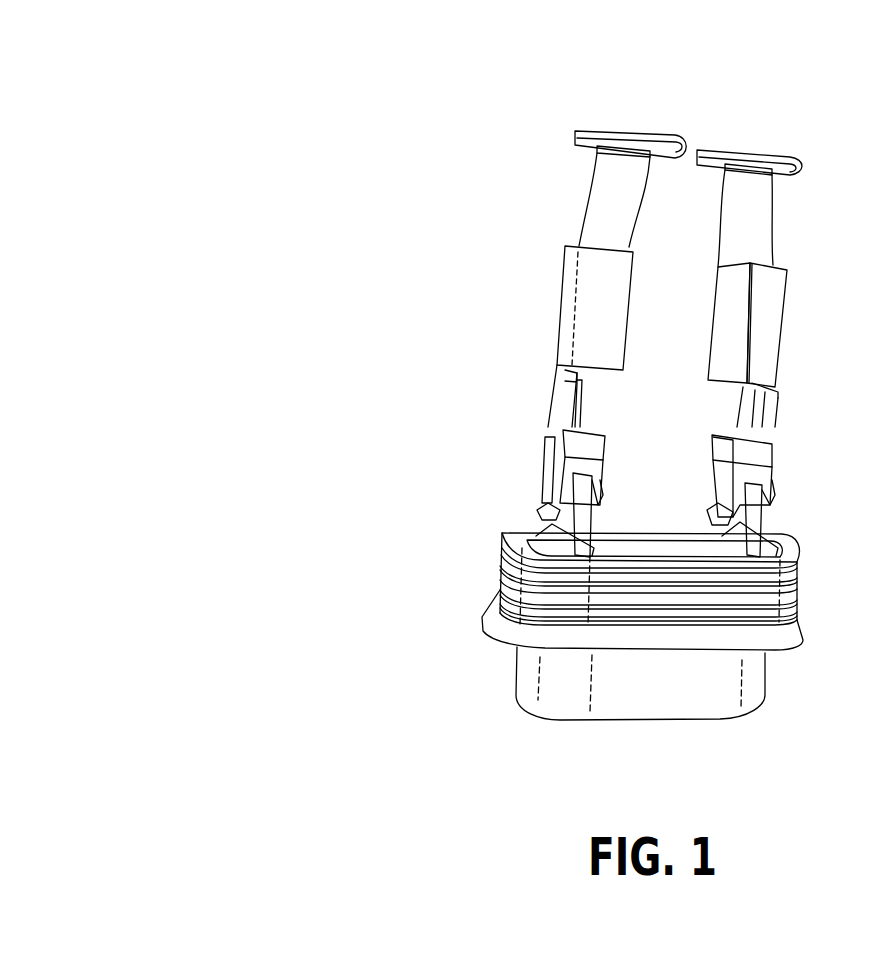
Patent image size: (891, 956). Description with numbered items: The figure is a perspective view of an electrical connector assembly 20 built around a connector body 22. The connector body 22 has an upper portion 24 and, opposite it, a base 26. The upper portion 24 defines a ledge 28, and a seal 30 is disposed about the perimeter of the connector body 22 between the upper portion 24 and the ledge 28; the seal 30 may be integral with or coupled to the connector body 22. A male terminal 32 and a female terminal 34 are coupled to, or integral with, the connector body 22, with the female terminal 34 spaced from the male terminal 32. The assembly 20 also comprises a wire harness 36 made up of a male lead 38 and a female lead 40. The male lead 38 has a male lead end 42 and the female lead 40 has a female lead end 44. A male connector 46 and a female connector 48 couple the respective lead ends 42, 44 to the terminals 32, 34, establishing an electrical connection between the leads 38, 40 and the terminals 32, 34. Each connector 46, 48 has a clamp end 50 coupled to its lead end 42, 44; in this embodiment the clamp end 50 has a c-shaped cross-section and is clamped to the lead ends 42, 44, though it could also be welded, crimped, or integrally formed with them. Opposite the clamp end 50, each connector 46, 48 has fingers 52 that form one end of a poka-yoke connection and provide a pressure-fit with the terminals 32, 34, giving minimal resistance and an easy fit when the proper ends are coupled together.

The electrical connector assembly 20 is at (126, 97).
The connector body 22 is at (806, 615).
The upper portion 24 is at (533, 592).
The base 26 is at (747, 703).
The ledge 28 is at (577, 637).
The seal 30 is at (497, 600).
The male terminal 32 is at (753, 533).
The female terminal 34 is at (553, 527).
The wire harness 36 is at (773, 143).
The male lead 38 is at (800, 167).
The female lead 40 is at (655, 145).
The male lead end 42 is at (767, 227).
The female lead end 44 is at (593, 202).
The male connector 46 is at (777, 358).
The female connector 48 is at (546, 340).
The clamp end 50 is at (568, 293).
The fingers 52 is at (540, 441).